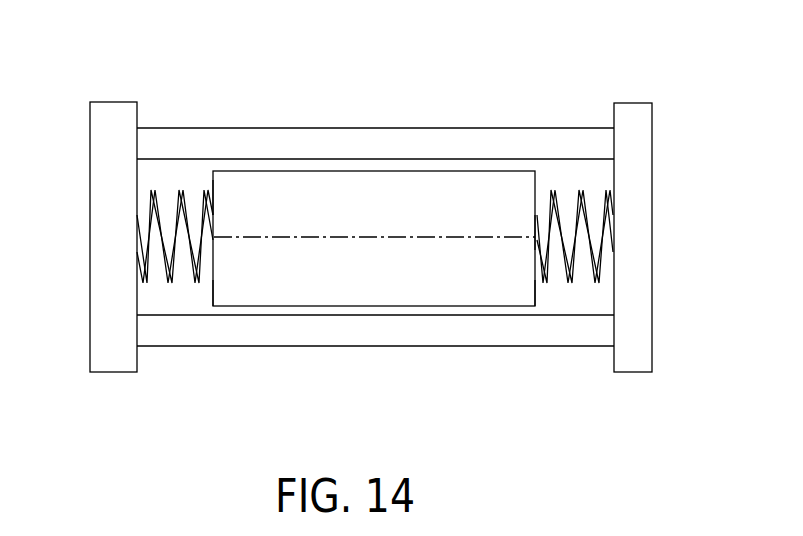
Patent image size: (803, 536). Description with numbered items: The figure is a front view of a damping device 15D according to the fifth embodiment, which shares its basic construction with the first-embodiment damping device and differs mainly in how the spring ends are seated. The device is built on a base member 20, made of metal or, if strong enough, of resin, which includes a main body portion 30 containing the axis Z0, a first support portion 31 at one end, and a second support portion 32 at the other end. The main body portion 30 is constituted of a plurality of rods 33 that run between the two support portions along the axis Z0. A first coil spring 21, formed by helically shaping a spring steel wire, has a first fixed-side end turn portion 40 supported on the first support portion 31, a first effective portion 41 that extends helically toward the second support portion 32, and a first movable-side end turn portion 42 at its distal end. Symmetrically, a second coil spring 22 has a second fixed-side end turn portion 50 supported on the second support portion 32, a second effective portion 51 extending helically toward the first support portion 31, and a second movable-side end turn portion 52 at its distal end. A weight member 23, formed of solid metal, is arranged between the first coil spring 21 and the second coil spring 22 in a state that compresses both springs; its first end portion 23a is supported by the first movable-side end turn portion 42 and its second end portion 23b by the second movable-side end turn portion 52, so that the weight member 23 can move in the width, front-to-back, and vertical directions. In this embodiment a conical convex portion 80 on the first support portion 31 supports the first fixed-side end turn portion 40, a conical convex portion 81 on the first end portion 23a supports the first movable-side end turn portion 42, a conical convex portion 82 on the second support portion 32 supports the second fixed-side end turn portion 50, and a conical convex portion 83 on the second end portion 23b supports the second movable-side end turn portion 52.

The damping device 15D is at (476, 80).
The base member 20 is at (165, 355).
The first coil spring 21 is at (572, 205).
The second coil spring 22 is at (193, 215).
The weight member 23 is at (445, 290).
The first end portion 23a is at (540, 300).
The second end portion 23b is at (213, 294).
The main body portion 30 is at (375, 248).
The first support portion 31 is at (645, 326).
The second support portion 32 is at (97, 326).
The rods 33 is at (313, 140).
The first fixed-side end turn portion 40 is at (605, 177).
The first effective portion 41 is at (565, 195).
The first movable-side end turn portion 42 is at (535, 232).
The second fixed-side end turn portion 50 is at (136, 177).
The second effective portion 51 is at (170, 205).
The second movable-side end turn portion 52 is at (215, 196).
The conical convex portion 80 is at (596, 215).
The conical convex portion 81 is at (553, 205).
The conical convex portion 82 is at (141, 204).
The conical convex portion 83 is at (200, 215).
The axis Z0 is at (387, 237).